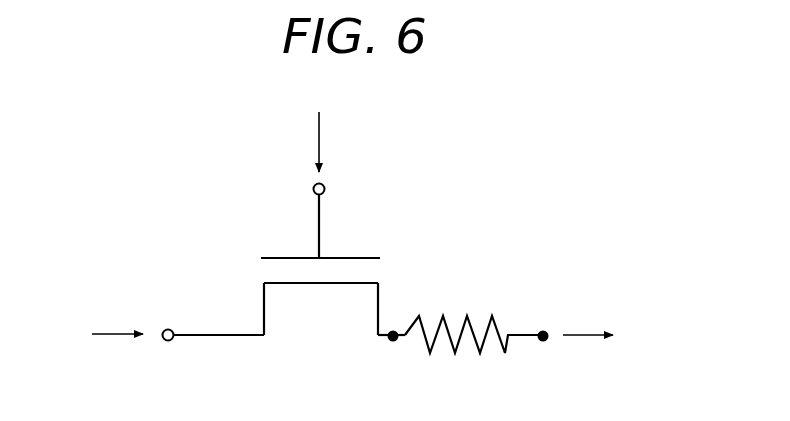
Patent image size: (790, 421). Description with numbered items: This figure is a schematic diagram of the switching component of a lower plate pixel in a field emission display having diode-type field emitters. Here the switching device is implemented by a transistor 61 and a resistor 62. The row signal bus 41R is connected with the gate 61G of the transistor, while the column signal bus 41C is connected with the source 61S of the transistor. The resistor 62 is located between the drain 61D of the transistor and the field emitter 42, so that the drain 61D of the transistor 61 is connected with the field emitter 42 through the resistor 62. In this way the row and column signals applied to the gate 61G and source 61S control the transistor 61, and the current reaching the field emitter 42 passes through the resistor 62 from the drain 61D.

The transistor 61 is at (320, 267).
The gate 61G is at (346, 177).
The source 61S is at (208, 316).
The drain 61D is at (391, 353).
The resistor 62 is at (474, 311).
The row signal bus 41R is at (347, 141).
The column signal bus 41C is at (91, 332).
The field emitter 42 is at (596, 336).